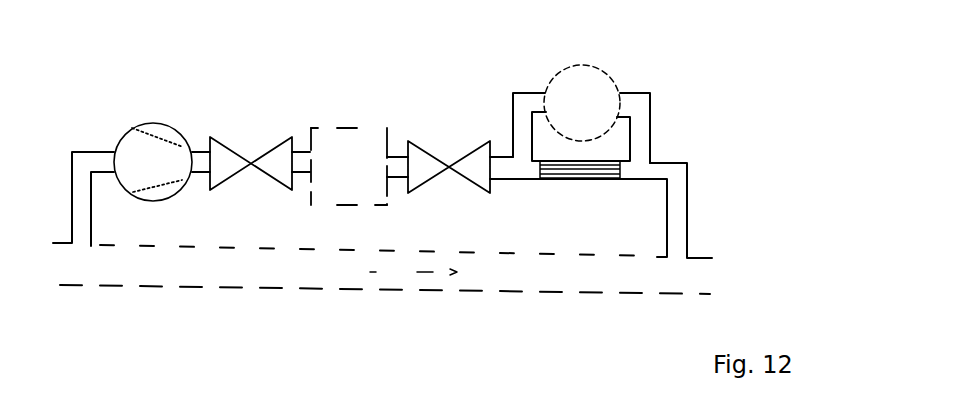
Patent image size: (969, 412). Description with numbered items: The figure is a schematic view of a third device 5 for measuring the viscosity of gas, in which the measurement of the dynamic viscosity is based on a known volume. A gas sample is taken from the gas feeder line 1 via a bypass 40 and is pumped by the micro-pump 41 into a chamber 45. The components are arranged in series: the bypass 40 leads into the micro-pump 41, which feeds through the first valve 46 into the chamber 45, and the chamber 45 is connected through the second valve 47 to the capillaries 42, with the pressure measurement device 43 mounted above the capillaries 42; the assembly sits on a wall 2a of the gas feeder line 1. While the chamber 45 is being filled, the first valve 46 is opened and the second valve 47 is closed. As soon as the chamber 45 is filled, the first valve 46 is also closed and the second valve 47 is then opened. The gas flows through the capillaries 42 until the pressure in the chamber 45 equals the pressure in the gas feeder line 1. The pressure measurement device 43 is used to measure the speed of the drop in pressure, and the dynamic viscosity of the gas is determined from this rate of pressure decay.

The device for measuring the viscosity 5 is at (85, 45).
The bypass 40 is at (85, 150).
The micro-pump 41 is at (178, 129).
The first valve 46 is at (280, 147).
The chamber 45 is at (358, 132).
The second valve 47 is at (422, 148).
The pressure measurement device 43 is at (551, 78).
The capillaries 42 is at (570, 182).
The duct wall 2a is at (675, 170).
The gas feeder line 1 is at (297, 263).